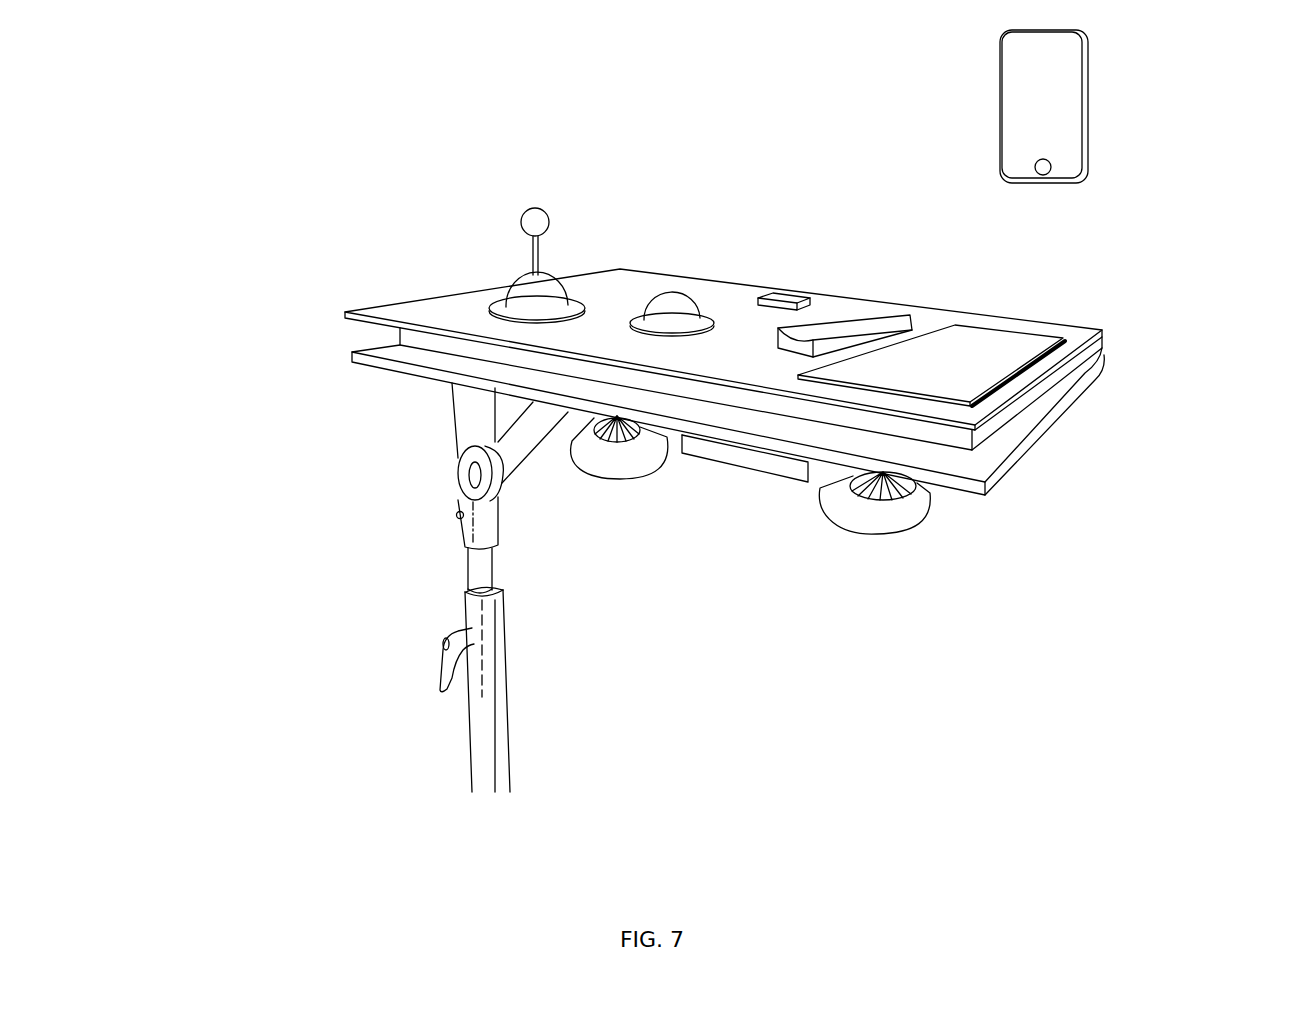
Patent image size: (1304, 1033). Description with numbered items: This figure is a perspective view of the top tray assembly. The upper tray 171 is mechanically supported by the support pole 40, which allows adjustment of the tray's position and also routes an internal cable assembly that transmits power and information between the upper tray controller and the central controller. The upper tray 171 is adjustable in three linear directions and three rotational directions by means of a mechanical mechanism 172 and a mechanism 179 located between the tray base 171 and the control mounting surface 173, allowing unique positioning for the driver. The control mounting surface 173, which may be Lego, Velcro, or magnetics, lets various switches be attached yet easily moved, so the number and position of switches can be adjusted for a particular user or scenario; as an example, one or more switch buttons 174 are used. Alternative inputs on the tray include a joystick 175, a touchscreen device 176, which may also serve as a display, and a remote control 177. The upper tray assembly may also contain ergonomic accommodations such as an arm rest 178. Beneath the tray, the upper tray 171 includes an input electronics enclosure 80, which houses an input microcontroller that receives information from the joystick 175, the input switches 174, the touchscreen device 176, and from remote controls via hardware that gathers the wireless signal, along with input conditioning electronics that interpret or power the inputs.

The control mounting surface 173 is at (370, 307).
The mechanism 179 is at (413, 333).
The upper tray 171 is at (1077, 387).
The mechanical mechanism 172 is at (522, 430).
The support pole 40 is at (507, 622).
The joystick 175 is at (541, 209).
The switch button 174 is at (672, 293).
The arm rest 178 is at (857, 318).
The touchscreen device 176 is at (1018, 347).
The remote control 177 is at (1088, 102).
The input electronics enclosure 80 is at (778, 477).